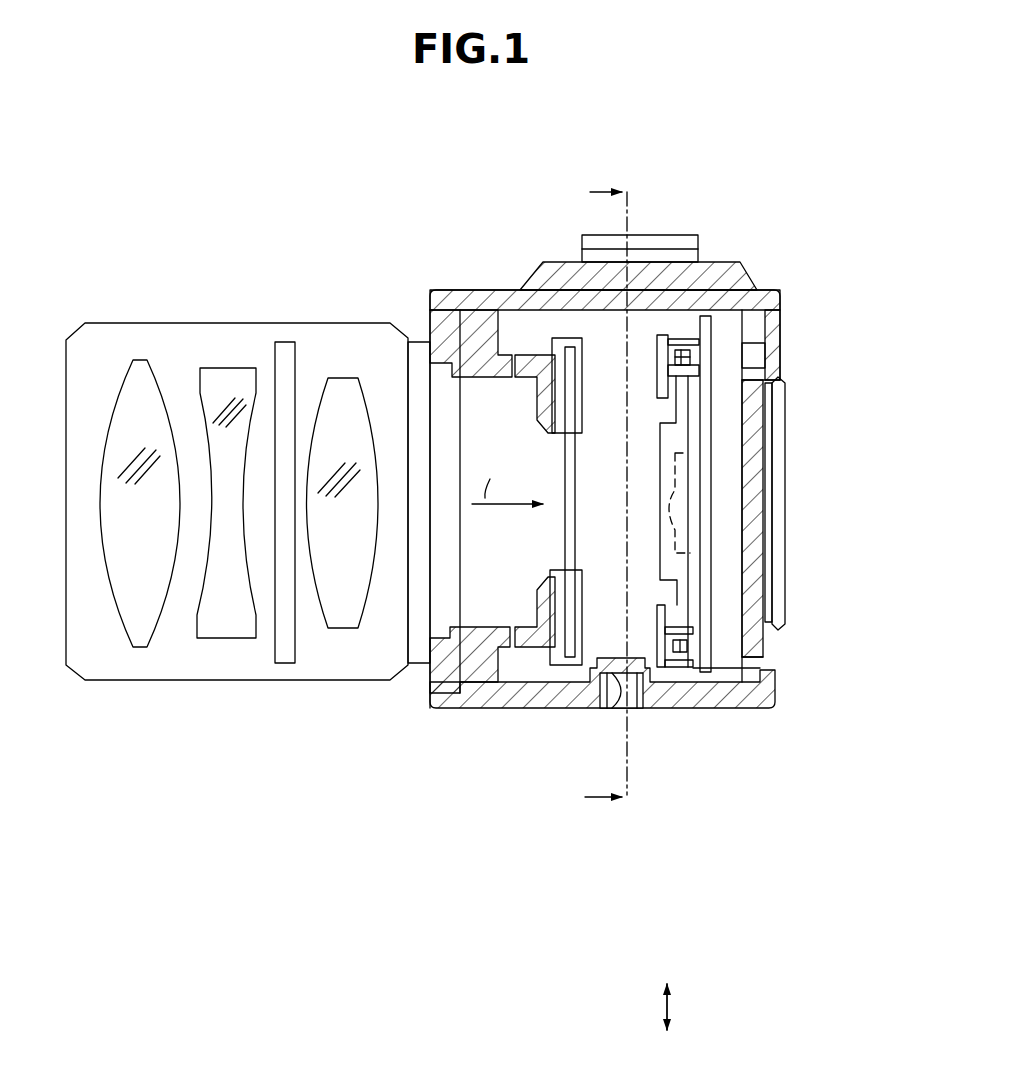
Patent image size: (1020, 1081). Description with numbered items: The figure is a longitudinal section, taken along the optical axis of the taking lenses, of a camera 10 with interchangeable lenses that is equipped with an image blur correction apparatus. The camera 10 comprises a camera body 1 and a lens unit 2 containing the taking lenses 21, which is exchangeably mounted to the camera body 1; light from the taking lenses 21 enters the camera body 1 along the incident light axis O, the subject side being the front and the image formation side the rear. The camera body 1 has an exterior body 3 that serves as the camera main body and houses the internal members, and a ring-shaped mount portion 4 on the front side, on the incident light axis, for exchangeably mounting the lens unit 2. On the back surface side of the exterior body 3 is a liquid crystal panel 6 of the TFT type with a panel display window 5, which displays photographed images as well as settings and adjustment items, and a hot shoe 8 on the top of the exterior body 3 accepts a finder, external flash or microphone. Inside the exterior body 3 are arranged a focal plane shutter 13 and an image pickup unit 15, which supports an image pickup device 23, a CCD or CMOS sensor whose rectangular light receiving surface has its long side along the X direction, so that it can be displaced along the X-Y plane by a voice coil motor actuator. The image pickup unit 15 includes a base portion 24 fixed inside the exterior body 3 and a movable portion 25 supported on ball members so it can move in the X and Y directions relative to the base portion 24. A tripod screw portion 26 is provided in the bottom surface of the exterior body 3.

The camera 10 is at (312, 222).
The camera body 1 is at (478, 290).
The lens unit 2 is at (165, 323).
The taking lenses 21 is at (338, 628).
The exterior body 3 is at (748, 709).
The mount portion 4 is at (430, 677).
The panel display window 5 is at (786, 402).
The liquid crystal panel 6 is at (765, 445).
The hot shoe 8 is at (689, 235).
The focal plane shutter 13 is at (560, 547).
The image pickup unit 15 is at (697, 680).
The image pickup device 23 is at (670, 527).
The base portion 24 is at (707, 604).
The movable portion 25 is at (675, 596).
The tripod screw portion 26 is at (621, 708).